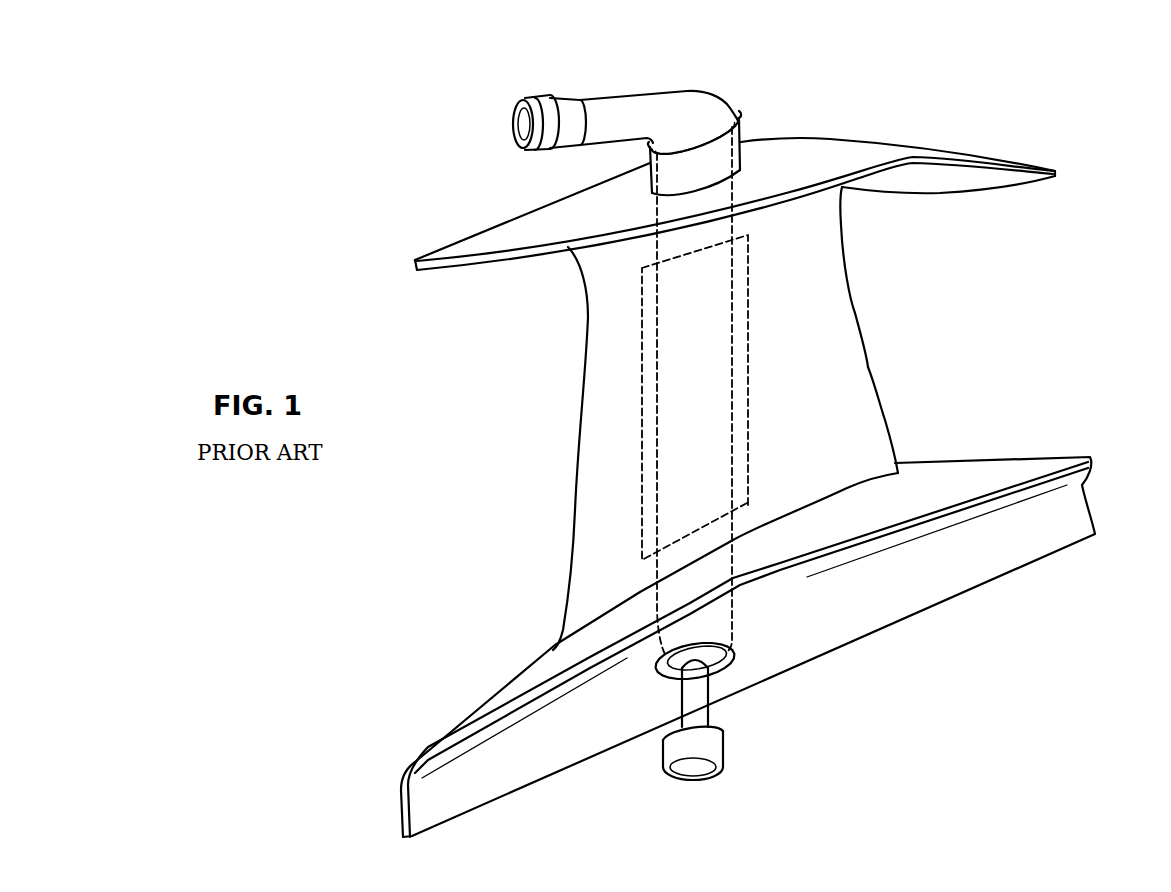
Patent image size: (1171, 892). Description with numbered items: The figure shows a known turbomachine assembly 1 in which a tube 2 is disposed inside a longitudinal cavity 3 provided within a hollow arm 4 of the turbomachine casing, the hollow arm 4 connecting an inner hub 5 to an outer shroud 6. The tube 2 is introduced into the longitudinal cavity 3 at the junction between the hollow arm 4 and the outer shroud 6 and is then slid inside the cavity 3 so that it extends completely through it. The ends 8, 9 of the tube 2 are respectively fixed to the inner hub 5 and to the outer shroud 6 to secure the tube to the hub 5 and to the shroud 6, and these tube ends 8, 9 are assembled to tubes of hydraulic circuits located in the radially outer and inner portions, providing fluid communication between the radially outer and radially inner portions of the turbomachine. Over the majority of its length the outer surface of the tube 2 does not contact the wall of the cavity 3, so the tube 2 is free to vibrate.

The turbomachine assembly 1 is at (1094, 281).
The tube 2 is at (692, 436).
The longitudinal cavity 3 is at (750, 385).
The hollow arm 4 is at (838, 315).
The inner hub 5 is at (1005, 547).
The outer shroud 6 is at (849, 136).
The tube end 8 is at (632, 90).
The tube end 9 is at (715, 692).